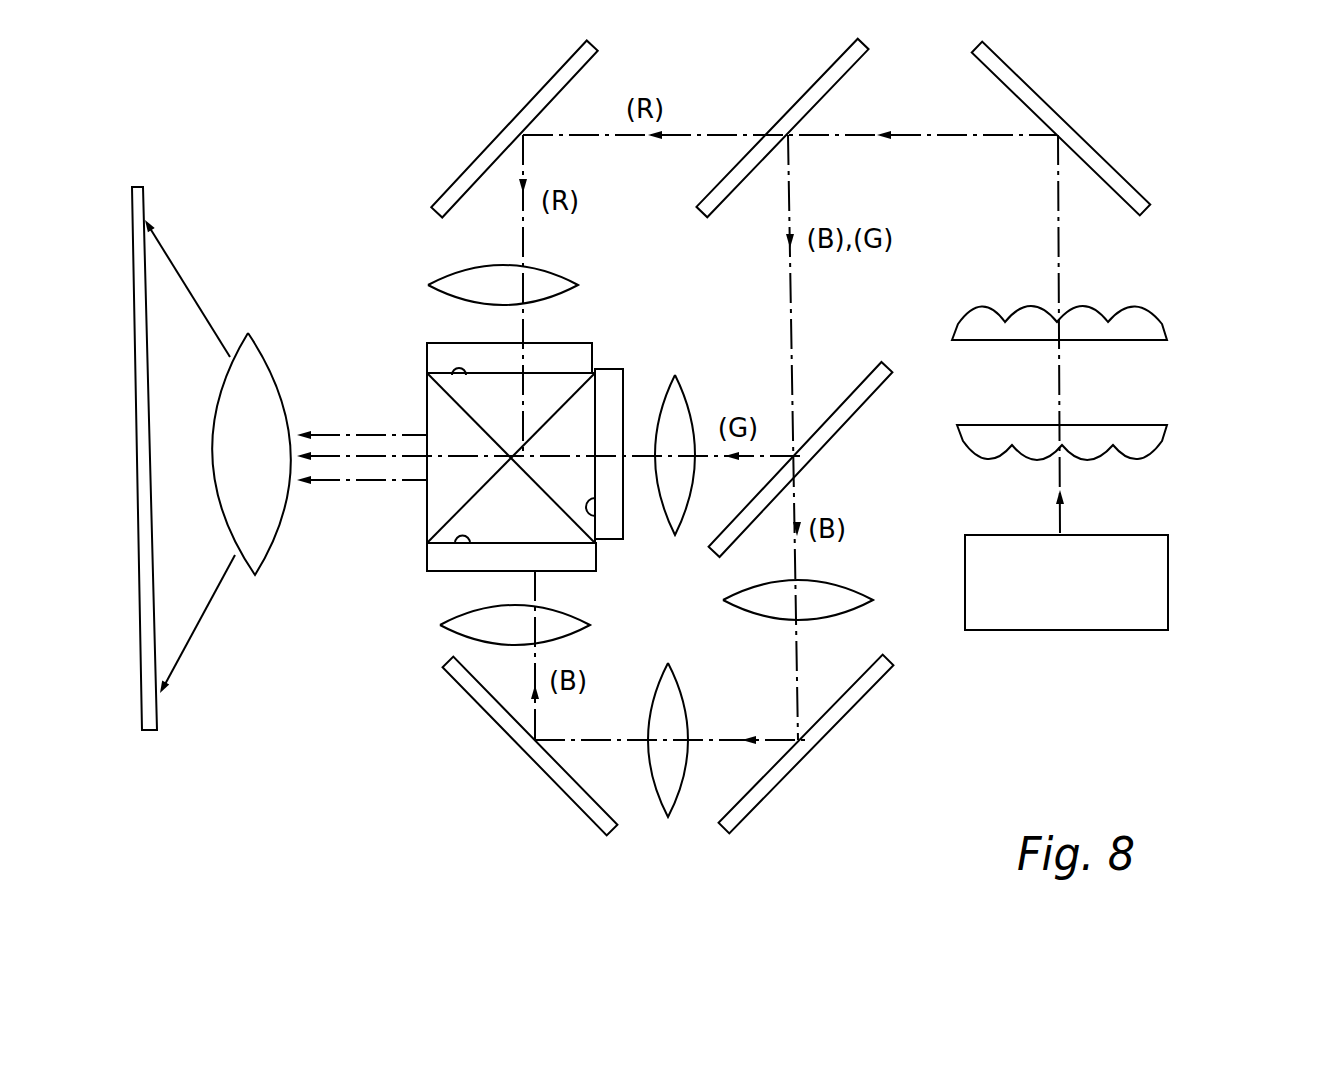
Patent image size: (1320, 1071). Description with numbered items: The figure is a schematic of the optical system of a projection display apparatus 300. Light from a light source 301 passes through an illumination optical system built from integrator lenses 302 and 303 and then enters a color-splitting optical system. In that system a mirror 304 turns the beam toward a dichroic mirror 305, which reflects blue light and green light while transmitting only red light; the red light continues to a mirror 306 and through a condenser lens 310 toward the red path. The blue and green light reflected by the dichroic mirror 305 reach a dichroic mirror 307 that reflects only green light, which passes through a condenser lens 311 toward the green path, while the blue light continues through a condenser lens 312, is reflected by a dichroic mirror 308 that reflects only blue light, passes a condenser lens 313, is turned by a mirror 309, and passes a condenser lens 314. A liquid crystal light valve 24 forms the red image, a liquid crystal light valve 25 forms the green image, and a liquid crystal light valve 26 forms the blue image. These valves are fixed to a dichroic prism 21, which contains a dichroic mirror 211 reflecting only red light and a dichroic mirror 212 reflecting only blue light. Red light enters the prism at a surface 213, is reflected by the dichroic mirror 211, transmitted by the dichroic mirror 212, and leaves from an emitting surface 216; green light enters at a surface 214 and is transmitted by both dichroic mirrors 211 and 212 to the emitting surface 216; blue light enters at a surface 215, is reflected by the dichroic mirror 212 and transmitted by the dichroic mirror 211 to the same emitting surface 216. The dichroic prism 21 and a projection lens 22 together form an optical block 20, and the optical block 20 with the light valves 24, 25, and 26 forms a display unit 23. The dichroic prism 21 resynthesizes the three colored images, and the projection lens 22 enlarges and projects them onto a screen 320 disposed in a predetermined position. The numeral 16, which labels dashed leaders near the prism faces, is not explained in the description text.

The projection display apparatus 300 is at (1180, 109).
The light source 301 is at (1170, 600).
The integrator lens 302 is at (1157, 438).
The integrator lens 303 is at (1145, 327).
The mirror 304 is at (1032, 93).
The dichroic mirror 305 is at (803, 97).
The mirror 306 is at (543, 90).
The dichroic mirror 307 is at (845, 403).
The dichroic mirror 308 is at (858, 693).
The mirror 309 is at (500, 722).
The condenser lens 310 is at (460, 278).
The condenser lens 311 is at (677, 410).
The condenser lens 312 is at (835, 590).
The condenser lens 313 is at (675, 790).
The condenser lens 314 is at (458, 628).
The screen 320 is at (152, 730).
The optical block 20 is at (292, 603).
The dichroic prism 21 is at (437, 512).
The projection lens 22 is at (255, 370).
The display unit 23 is at (513, 425).
The liquid crystal light valve 24 is at (437, 357).
The liquid crystal light valve 25 is at (610, 397).
The liquid crystal light valve 26 is at (593, 555).
The optical element (polarizing sheet) 16 is at (460, 355).
The dichroic mirror 211 is at (487, 487).
The dichroic mirror 212 is at (428, 400).
The surface 213 is at (455, 370).
The surface 214 is at (600, 512).
The surface 215 is at (458, 545).
The emitting surface 216 is at (425, 430).